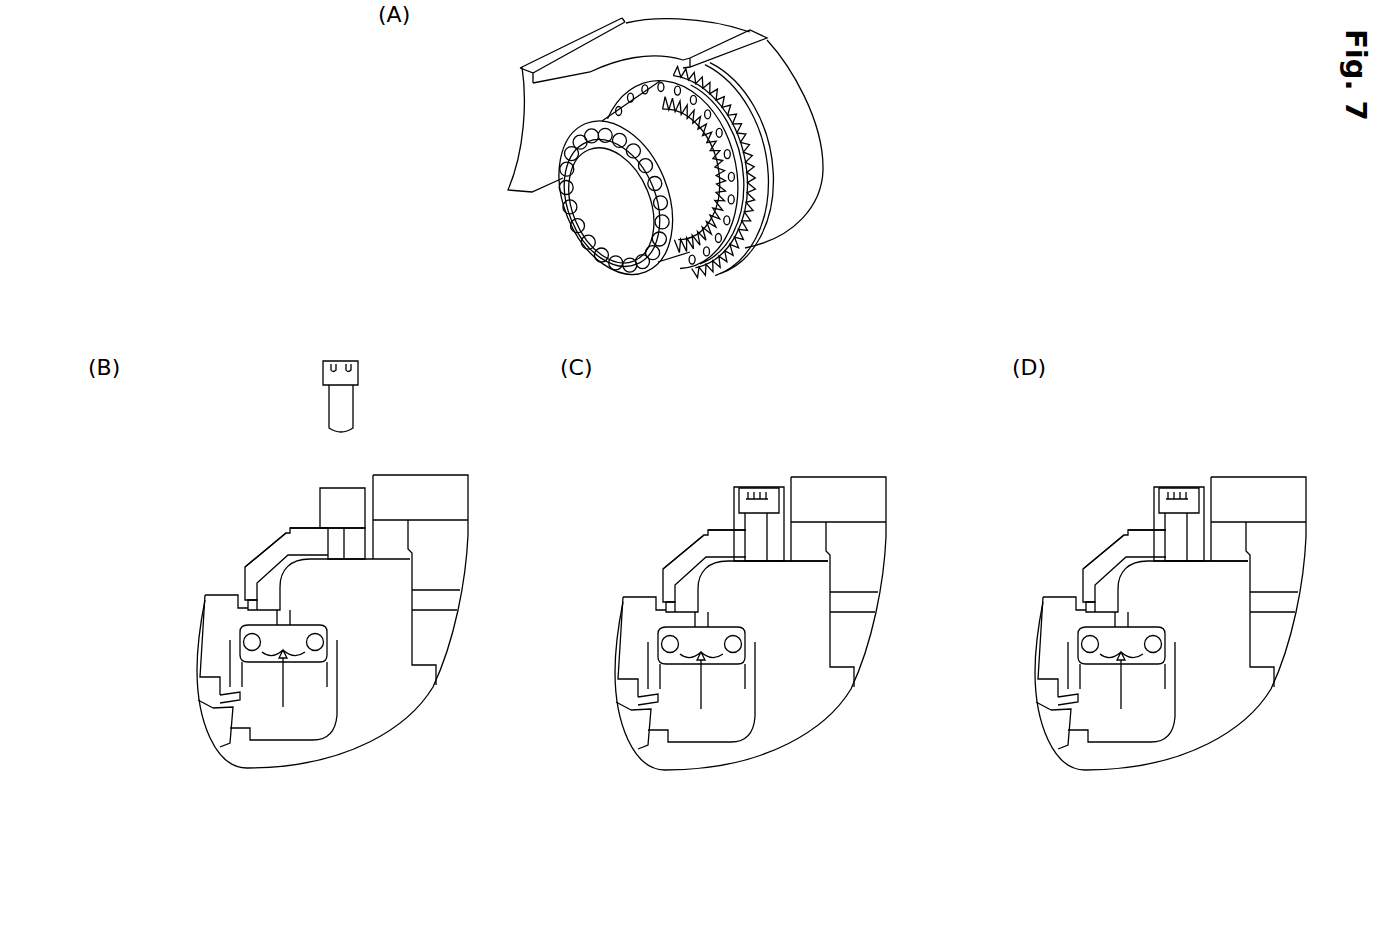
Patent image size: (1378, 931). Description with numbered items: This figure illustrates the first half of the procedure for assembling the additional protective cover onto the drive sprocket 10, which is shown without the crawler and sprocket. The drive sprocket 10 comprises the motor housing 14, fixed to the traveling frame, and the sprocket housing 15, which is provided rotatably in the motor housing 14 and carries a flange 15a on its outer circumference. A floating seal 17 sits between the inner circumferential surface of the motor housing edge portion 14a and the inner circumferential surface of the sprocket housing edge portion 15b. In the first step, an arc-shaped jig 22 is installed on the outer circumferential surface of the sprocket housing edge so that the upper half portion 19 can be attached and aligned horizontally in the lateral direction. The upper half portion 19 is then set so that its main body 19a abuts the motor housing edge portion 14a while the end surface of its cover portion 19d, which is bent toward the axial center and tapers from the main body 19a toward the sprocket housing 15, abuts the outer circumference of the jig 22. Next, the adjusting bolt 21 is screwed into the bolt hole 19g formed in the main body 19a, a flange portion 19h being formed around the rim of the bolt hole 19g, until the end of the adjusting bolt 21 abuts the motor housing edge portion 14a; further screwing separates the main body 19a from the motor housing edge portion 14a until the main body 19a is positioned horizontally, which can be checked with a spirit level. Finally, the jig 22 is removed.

The drive sprocket 10 is at (891, 129).
The motor housing 14 is at (800, 172).
The motor housing edge portion 14a is at (768, 593).
The sprocket housing 15 is at (685, 182).
The flange 15a is at (723, 252).
The sprocket housing edge portion 15b is at (268, 614).
The floating seal 17 is at (298, 657).
The upper half portion 19 is at (283, 523).
The main body 19a is at (305, 533).
The cover portion 19d is at (265, 562).
The bolt hole 19g is at (340, 548).
The flange portion 19h is at (343, 498).
The adjusting bolt 21 is at (342, 375).
The jig 22 is at (737, 127).